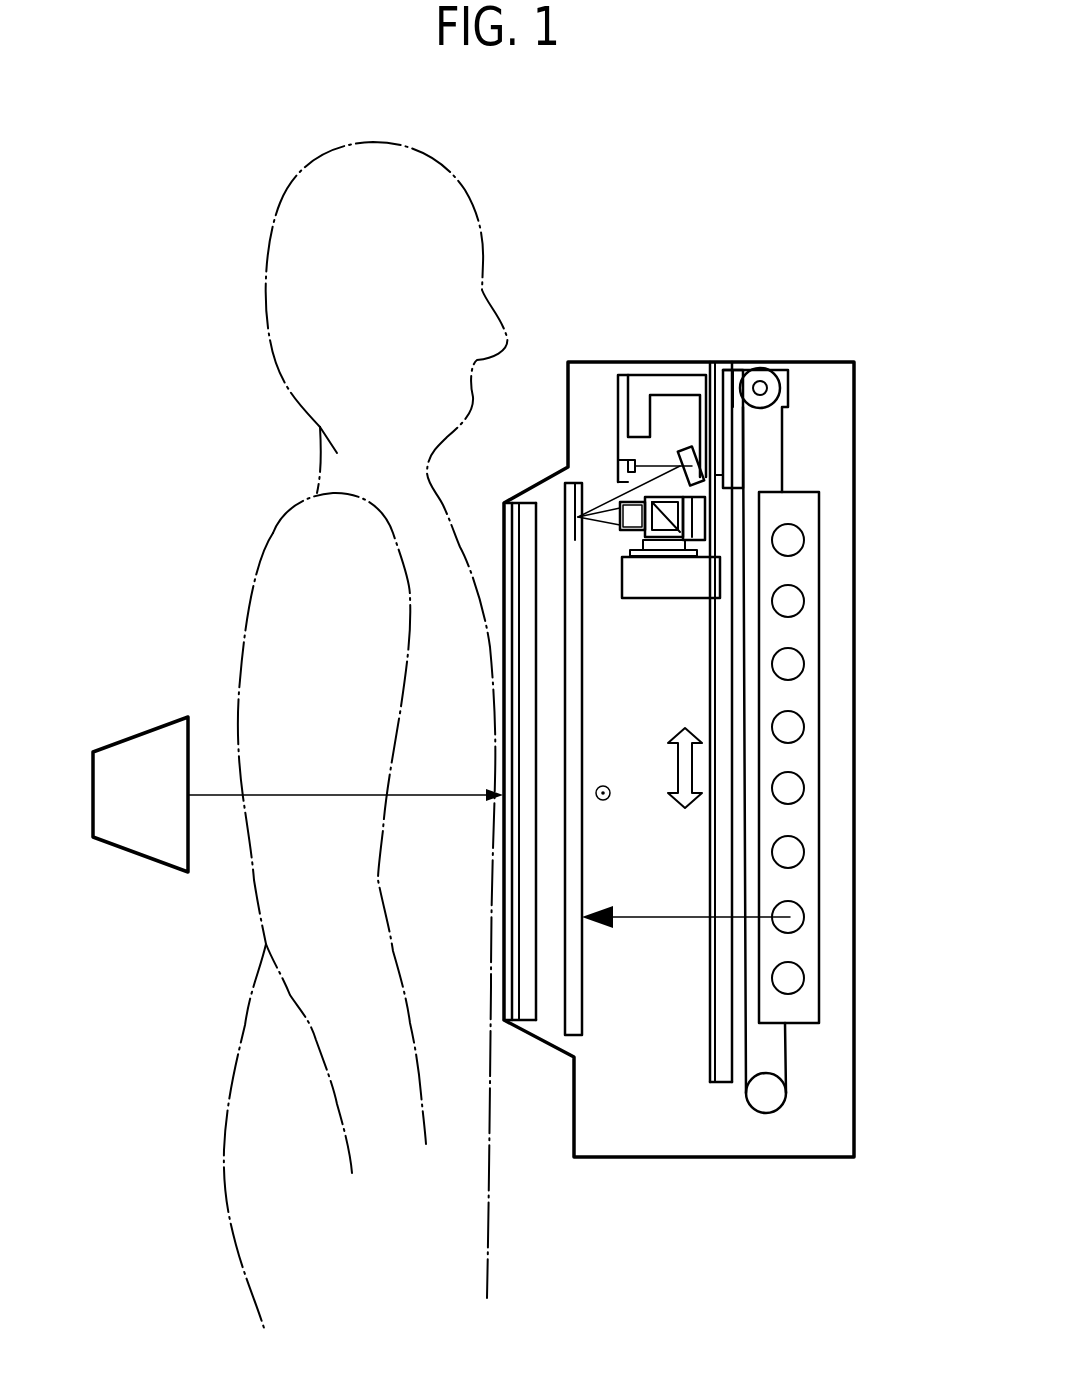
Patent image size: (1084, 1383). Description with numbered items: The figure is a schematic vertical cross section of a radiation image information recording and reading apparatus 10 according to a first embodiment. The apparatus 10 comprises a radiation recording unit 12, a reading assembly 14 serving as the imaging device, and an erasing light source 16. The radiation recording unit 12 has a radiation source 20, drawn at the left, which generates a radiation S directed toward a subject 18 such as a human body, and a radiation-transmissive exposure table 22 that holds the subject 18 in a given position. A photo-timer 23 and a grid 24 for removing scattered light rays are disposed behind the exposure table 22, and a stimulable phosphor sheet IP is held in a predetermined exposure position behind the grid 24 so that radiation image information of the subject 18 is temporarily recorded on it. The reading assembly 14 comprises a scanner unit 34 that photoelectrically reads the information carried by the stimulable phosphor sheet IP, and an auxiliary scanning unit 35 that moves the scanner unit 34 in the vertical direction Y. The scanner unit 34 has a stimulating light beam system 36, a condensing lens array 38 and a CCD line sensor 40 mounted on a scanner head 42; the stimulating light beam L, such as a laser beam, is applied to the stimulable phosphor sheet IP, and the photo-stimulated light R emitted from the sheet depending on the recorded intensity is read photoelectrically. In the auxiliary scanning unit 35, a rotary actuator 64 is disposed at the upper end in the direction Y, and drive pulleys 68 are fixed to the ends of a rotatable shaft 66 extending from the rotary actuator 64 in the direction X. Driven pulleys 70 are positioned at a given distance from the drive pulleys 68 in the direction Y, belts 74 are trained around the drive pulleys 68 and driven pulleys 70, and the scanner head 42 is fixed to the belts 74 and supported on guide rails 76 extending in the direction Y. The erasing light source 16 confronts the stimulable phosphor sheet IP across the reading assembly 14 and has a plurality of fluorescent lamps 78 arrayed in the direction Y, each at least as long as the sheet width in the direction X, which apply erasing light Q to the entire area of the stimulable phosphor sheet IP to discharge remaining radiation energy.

The radiation image information recording and reading apparatus 10 is at (866, 253).
The radiation recording unit 12 is at (467, 520).
The reading assembly 14 is at (445, 723).
The erasing light source 16 is at (835, 801).
The subject 18 is at (271, 522).
The radiation source 20 is at (152, 752).
The exposure table 22 is at (502, 550).
The photo-timer 23 is at (510, 662).
The grid 24 is at (535, 882).
The scanner unit 34 is at (638, 612).
The auxiliary scanning unit 35 is at (818, 417).
The stimulating light beam system 36 is at (616, 456).
The condensing lens array 38 is at (677, 494).
The CCD line sensor 40 is at (662, 607).
The scanner head 42 is at (672, 383).
The rotary actuator 64 is at (788, 370).
The rotatable shaft 66 is at (733, 375).
The drive pulleys 68 is at (758, 387).
The driven pulleys 70 is at (768, 1094).
The belts 74 is at (783, 482).
The guide rails 76 is at (721, 1062).
The fluorescent lamps 78 is at (790, 917).
The radiation S is at (216, 793).
The stimulating light beam L is at (635, 482).
The photo-stimulated light R is at (599, 552).
The stimulable phosphor sheet IP is at (578, 843).
The erasing light Q is at (696, 920).
The direction X is at (603, 776).
The direction Y is at (673, 768).